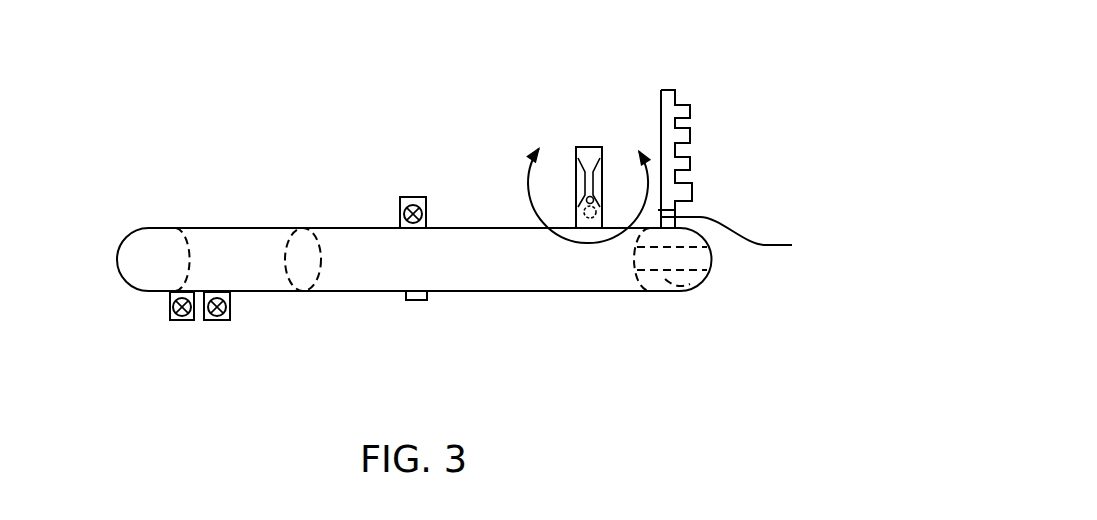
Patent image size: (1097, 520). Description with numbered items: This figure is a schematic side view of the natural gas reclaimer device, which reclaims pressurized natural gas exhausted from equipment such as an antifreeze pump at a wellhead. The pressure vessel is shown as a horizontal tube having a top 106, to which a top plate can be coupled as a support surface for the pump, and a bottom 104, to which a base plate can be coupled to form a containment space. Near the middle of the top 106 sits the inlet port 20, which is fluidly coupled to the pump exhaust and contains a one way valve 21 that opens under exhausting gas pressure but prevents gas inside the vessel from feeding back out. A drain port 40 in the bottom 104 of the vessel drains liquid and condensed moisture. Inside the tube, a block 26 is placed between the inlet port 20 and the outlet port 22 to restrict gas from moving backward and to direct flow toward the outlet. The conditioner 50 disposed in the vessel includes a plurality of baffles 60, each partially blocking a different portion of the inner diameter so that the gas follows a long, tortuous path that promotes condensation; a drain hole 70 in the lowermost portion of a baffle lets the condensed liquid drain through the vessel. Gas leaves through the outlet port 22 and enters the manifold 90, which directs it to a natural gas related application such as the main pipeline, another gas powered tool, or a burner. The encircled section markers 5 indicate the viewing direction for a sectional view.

The section view reference / rotation indicator 5 is at (588, 180).
The inlet port 20 is at (412, 197).
The one way valve 21 is at (402, 212).
The outlet port 22 is at (745, 238).
The block 26 is at (318, 282).
The drain port 40 is at (172, 312).
The conditioner 50 is at (727, 205).
The baffles 60 is at (740, 308).
The drain hole 70 is at (673, 292).
The manifold 90 is at (666, 90).
The bottom of the vessel 104 is at (553, 291).
The top of the vessel 106 is at (210, 225).